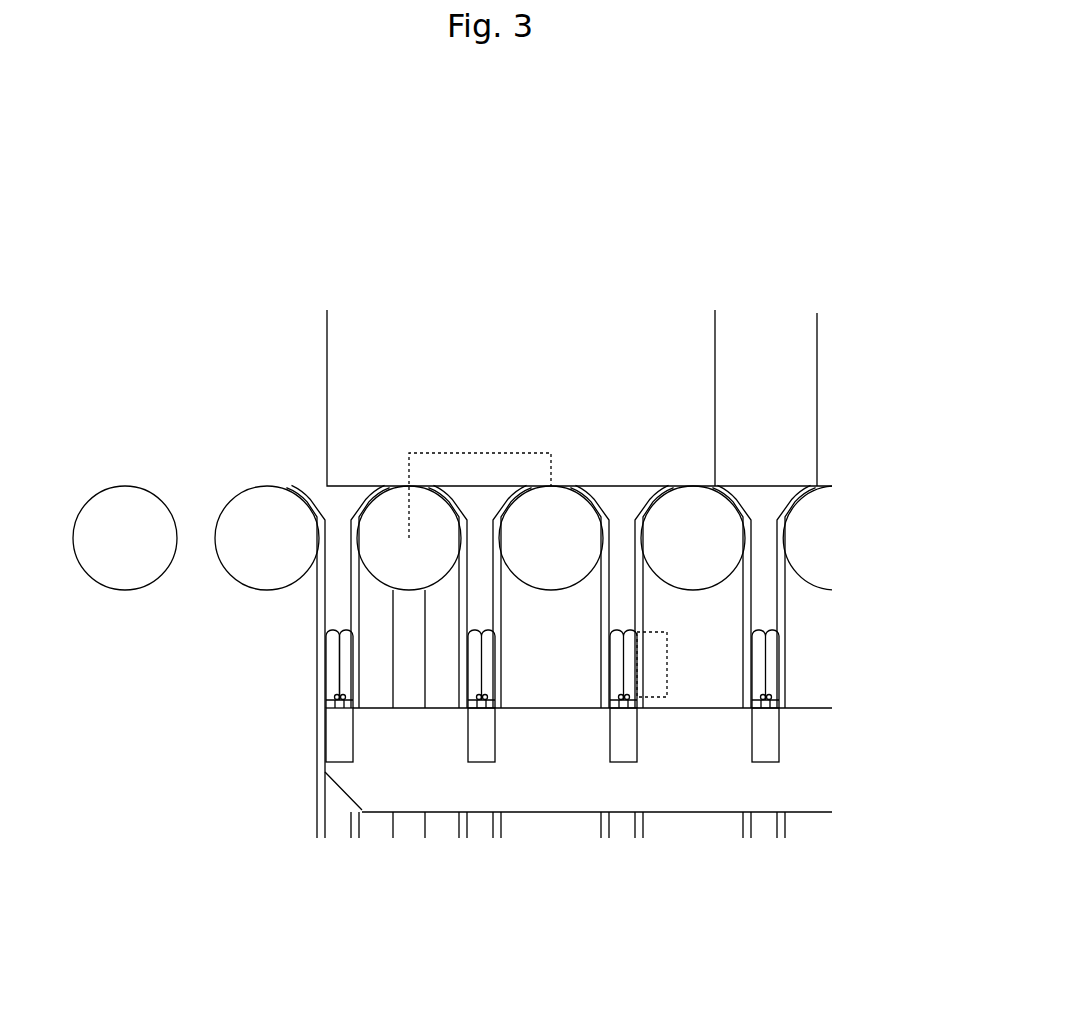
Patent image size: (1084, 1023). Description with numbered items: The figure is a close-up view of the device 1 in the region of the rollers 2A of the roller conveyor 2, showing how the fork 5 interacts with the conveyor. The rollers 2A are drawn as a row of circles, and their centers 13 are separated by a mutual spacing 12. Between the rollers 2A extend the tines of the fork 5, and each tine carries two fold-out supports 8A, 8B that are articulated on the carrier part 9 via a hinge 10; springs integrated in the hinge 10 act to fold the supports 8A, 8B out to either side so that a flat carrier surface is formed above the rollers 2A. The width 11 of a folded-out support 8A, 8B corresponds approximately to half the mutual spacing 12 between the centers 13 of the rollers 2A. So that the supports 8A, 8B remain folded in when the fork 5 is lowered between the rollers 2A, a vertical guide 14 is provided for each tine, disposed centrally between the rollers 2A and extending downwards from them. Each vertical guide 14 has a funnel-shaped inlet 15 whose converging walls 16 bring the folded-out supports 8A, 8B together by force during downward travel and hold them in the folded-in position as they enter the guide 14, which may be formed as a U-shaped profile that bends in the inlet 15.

The device 1 is at (382, 192).
The roller conveyor 2 is at (108, 603).
The rollers 2A is at (272, 545).
The fork 5 is at (678, 785).
The fold-out support 8A is at (333, 667).
The fold-out support 8B is at (350, 662).
The carrier part 9 is at (487, 760).
The hinge 10 is at (465, 703).
The width 11 is at (678, 663).
The mutual spacing 12 is at (478, 453).
The centers 13 is at (550, 538).
The vertical guide 14 is at (325, 612).
The funnel-shaped inlet 15 is at (625, 508).
The converging walls 16 is at (318, 500).